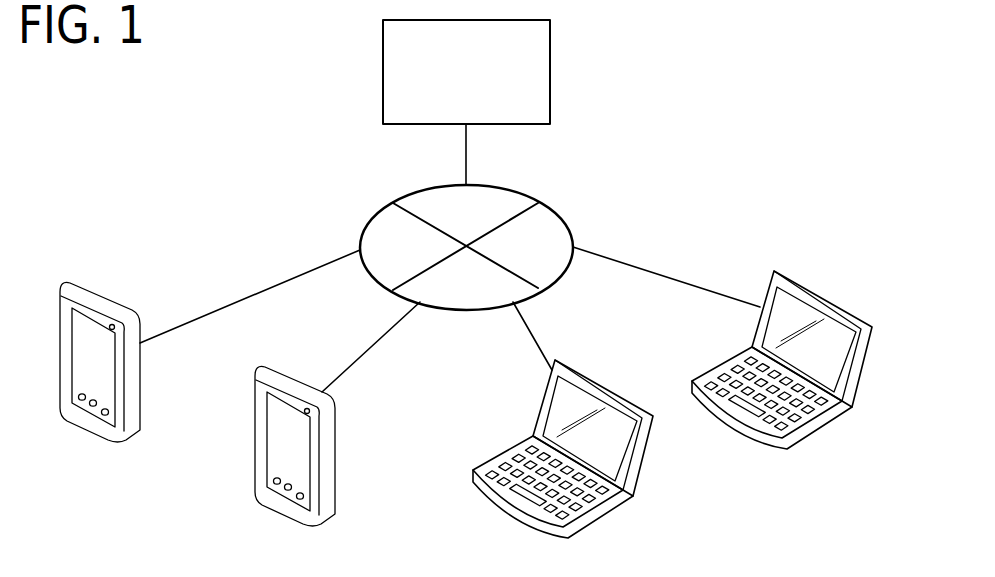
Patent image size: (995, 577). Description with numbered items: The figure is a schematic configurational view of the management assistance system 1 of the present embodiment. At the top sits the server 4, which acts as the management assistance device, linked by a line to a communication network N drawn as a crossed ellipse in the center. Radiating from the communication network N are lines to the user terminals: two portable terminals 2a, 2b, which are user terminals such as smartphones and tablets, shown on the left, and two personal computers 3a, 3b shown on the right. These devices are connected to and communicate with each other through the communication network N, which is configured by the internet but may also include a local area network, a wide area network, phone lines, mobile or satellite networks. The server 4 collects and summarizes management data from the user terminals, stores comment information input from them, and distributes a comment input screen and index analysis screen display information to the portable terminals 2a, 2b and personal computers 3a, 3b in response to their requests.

The management assistance system 1 is at (718, 66).
The server 4 is at (552, 63).
The communication network N is at (525, 195).
The portable terminal 2a is at (108, 292).
The portable terminal 2b is at (295, 372).
The personal computer 3a is at (612, 388).
The personal computer 3b is at (828, 298).